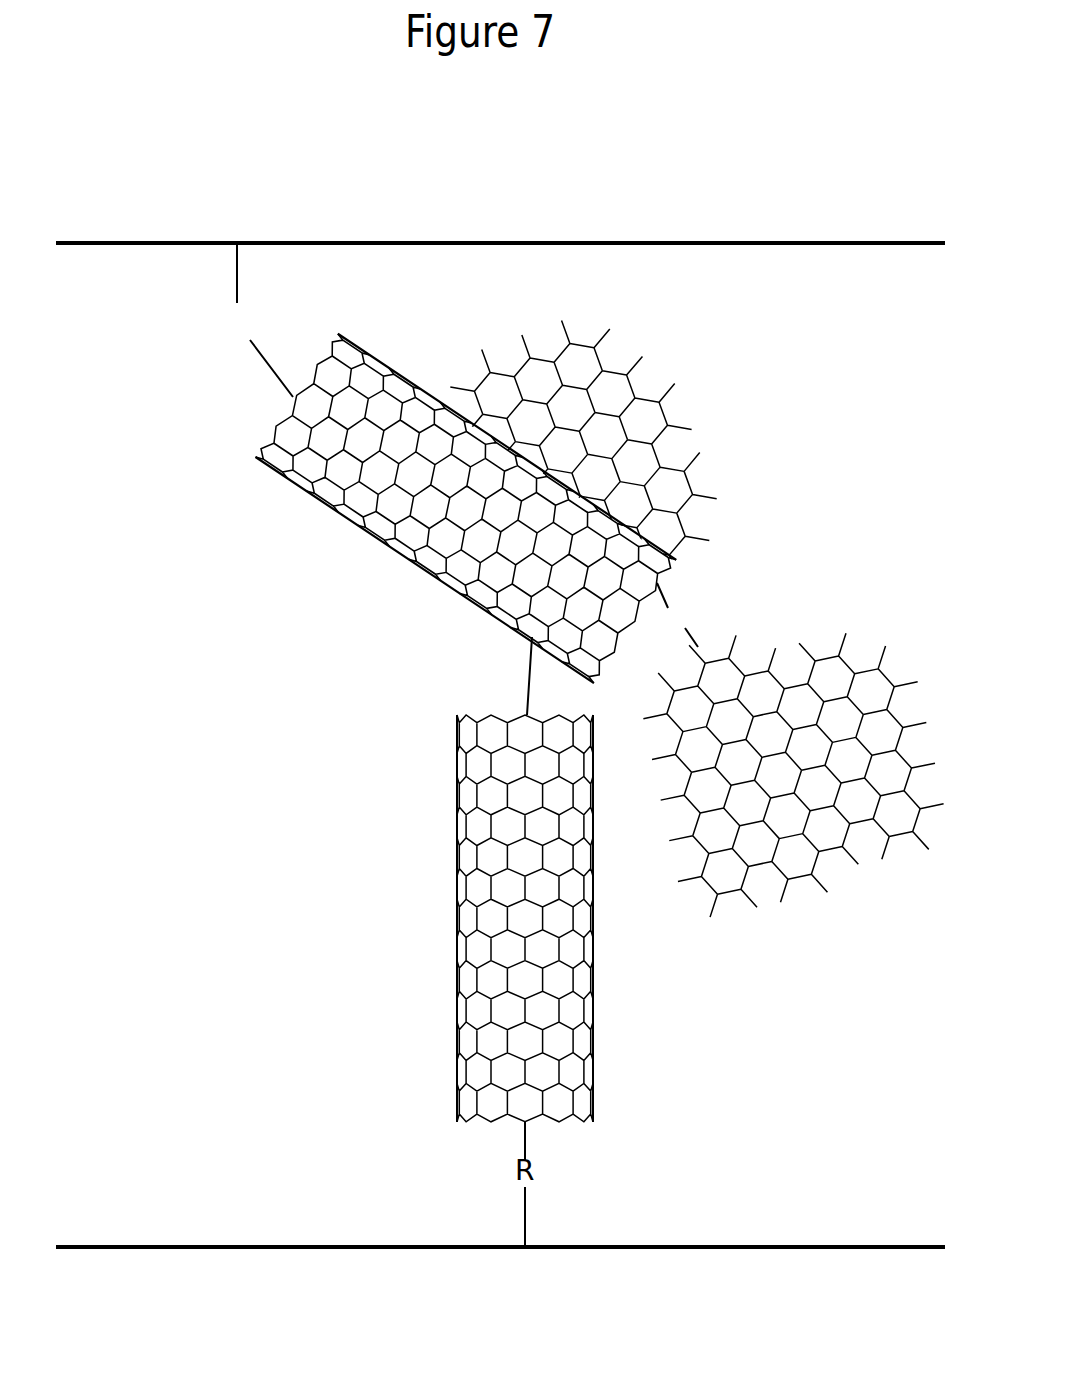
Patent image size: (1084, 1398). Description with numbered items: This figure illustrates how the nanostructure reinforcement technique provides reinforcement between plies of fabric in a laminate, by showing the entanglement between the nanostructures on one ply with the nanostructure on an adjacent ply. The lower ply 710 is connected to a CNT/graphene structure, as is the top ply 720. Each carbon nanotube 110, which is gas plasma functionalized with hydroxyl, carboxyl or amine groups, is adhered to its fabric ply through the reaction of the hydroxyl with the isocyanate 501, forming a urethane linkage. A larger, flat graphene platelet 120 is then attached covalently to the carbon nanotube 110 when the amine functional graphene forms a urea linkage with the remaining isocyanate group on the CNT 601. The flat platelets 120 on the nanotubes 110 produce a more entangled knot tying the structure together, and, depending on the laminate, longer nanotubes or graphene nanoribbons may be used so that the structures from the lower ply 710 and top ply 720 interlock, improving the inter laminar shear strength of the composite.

The carbon nanotube 110 is at (466, 980).
The graphene platelet 120 is at (866, 830).
The isocyanate 501 is at (218, 310).
The remaining isocyanate group on the CNT 601 is at (510, 668).
The lower ply 710 is at (458, 1257).
The top ply 720 is at (584, 242).